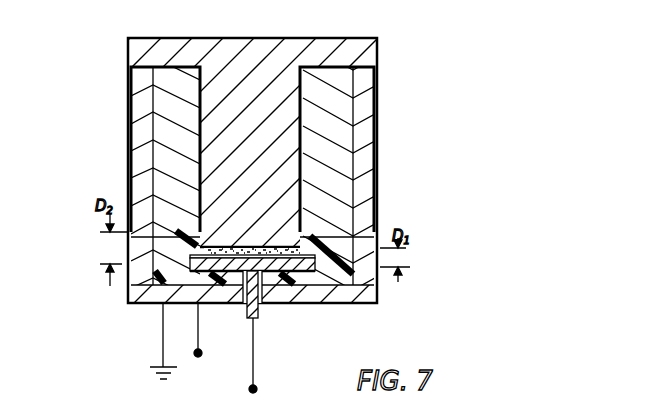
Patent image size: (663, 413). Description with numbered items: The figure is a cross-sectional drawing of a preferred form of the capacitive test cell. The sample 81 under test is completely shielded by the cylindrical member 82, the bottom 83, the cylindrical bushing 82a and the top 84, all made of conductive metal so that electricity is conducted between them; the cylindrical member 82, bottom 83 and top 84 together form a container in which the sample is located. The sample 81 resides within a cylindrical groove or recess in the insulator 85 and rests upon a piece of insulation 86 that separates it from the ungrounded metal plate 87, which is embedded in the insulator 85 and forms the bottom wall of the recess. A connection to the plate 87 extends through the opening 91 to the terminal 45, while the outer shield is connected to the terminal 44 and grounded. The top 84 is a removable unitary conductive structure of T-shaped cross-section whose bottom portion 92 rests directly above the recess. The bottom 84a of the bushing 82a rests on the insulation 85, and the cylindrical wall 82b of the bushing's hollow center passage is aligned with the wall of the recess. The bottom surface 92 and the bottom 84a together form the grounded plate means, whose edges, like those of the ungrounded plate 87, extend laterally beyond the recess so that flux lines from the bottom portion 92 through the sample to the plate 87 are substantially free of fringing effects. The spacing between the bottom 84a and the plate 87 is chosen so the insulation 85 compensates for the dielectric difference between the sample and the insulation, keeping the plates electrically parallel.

The cylindrical member 82 is at (140, 133).
The cylindrical bushing 82a is at (340, 142).
The cylindrical wall of the hollow center passage of the bushing 82b is at (300, 118).
The top 84 is at (262, 52).
The bottom of metal bushing 84a is at (340, 226).
The bottom portion of the top 92 is at (298, 250).
The sample 81 is at (312, 256).
The bottom 83 is at (365, 300).
The insulator 85 is at (355, 273).
The piece of insulation 86 is at (243, 272).
The ungrounded metal plate 87 is at (303, 303).
The opening 91 is at (272, 303).
The terminal 44 is at (199, 357).
The terminal 45 is at (257, 389).